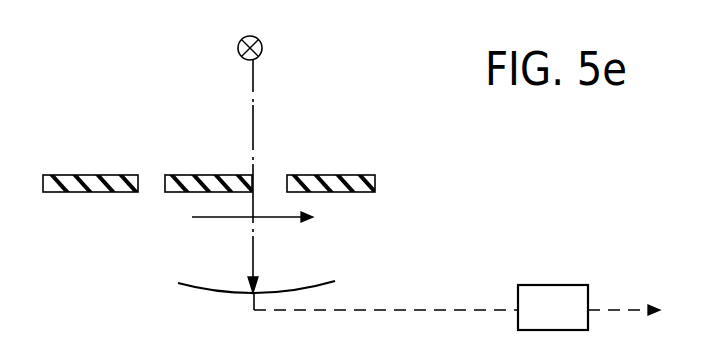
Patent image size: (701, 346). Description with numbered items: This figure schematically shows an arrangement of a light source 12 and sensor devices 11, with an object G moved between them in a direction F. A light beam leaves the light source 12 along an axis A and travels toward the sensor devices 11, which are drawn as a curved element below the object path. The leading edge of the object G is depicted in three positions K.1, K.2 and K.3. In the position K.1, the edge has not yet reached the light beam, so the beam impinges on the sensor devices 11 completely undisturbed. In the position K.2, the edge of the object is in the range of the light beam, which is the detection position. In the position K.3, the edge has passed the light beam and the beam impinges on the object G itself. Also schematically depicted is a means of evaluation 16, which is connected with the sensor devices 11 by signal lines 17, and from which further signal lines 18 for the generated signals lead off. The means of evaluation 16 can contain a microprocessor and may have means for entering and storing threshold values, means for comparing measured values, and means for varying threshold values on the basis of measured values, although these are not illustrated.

The light source 12 is at (262, 48).
The optical axis A is at (253, 119).
The object G is at (88, 175).
The first position of the edge K.1 is at (161, 143).
The second position of the edge K.2 is at (239, 151).
The third position of the edge K.3 is at (358, 151).
The direction of movement F is at (223, 217).
The sensor devices 11 is at (208, 290).
The signal lines 17 is at (468, 310).
The means of evaluation 16 is at (552, 285).
The further signal lines 18 is at (618, 310).